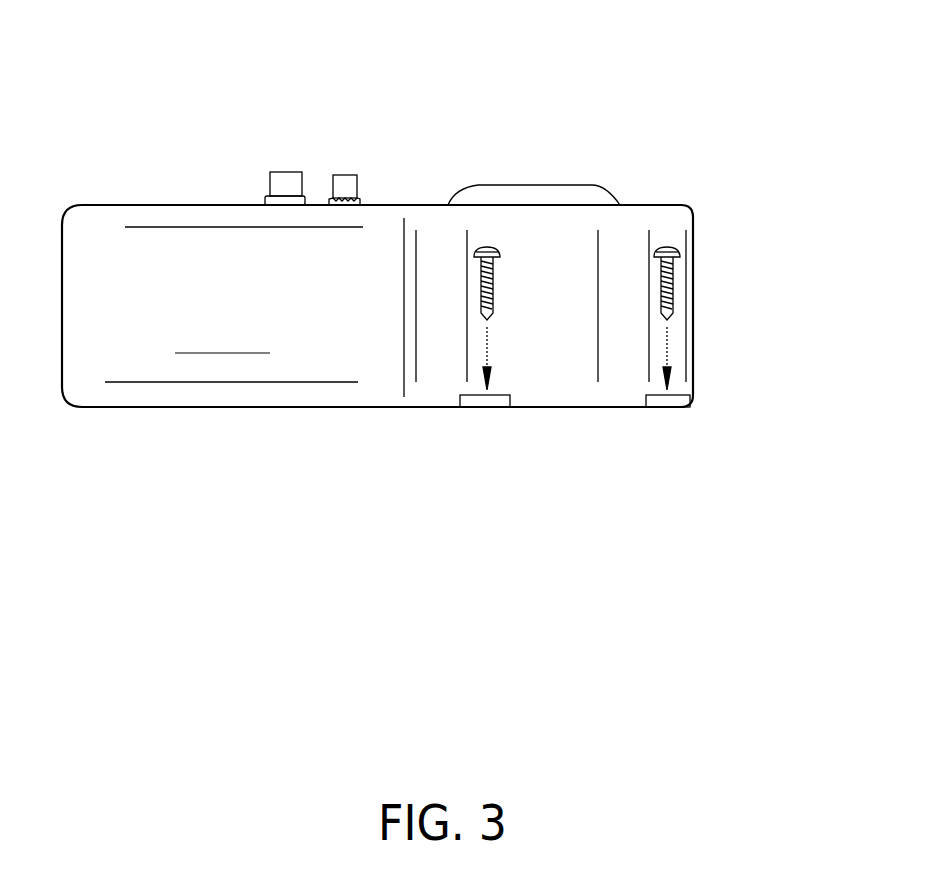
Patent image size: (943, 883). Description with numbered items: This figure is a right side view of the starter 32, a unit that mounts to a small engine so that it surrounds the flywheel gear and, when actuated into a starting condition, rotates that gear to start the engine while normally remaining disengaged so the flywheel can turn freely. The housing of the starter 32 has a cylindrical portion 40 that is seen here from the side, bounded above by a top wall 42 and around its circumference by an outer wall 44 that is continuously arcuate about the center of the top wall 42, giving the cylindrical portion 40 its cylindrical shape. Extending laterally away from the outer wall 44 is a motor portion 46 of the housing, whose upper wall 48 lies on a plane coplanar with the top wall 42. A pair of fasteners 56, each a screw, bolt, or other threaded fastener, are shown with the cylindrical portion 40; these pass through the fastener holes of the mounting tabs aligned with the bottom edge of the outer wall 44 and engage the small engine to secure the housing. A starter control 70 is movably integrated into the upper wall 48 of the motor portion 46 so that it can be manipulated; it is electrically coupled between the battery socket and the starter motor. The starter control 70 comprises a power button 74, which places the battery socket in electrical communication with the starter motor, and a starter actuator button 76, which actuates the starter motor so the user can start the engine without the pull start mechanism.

The starter 32 is at (678, 165).
The cylindrical portion 40 is at (550, 390).
The top wall 42 is at (538, 205).
The outer wall 44 is at (585, 363).
The motor portion 46 is at (234, 360).
The upper wall 48 is at (170, 203).
The fasteners 56 is at (485, 247).
The starter control 70 is at (311, 106).
The power button 74 is at (290, 175).
The starter actuator button 76 is at (343, 178).